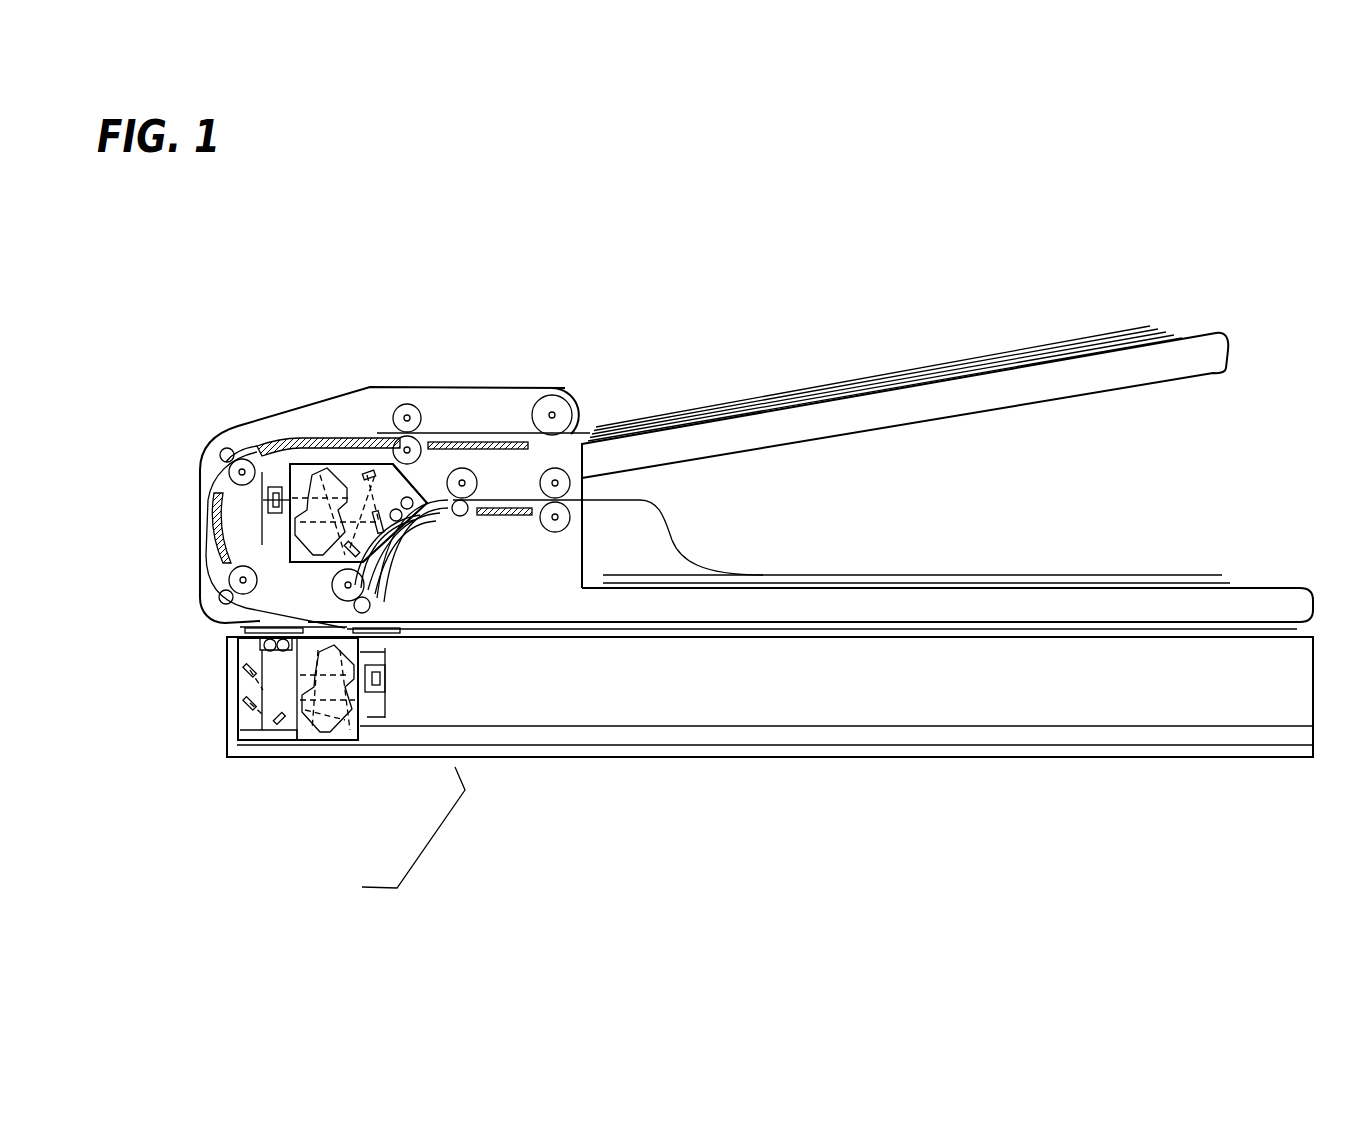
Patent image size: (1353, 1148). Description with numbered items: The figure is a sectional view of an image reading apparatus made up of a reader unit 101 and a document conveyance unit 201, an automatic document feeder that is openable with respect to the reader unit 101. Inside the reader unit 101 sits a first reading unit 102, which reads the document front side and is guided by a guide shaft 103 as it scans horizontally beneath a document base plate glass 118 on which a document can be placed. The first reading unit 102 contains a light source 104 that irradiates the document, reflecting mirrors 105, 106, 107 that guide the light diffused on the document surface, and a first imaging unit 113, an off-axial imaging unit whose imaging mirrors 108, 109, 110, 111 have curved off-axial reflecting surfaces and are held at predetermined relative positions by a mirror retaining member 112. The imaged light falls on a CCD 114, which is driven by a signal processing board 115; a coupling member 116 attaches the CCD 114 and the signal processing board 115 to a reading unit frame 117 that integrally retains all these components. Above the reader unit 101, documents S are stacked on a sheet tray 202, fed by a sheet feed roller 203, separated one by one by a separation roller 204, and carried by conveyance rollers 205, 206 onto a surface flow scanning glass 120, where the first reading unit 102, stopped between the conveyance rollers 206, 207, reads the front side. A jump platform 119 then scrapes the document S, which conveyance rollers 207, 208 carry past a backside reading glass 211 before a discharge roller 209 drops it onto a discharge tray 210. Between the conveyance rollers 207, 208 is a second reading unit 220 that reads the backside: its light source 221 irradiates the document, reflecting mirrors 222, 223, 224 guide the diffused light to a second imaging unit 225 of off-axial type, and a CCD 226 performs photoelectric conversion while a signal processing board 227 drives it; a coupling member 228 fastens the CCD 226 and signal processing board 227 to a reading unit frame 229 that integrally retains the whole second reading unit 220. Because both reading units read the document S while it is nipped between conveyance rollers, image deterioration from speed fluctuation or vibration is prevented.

The reader unit 101 is at (603, 760).
The first reading unit 102 is at (232, 693).
The guide shaft 103 is at (787, 737).
The light source 104 is at (265, 645).
The reflecting mirror 105 is at (277, 645).
The reflecting mirror 106 is at (245, 668).
The reflecting mirror 107 is at (242, 698).
The imaging mirror 108 is at (365, 740).
The imaging mirror 109 is at (312, 740).
The imaging mirror 110 is at (350, 740).
The imaging mirror 111 is at (317, 740).
The mirror retaining member 112 is at (342, 740).
The first imaging unit 113 is at (432, 840).
The CCD 114 is at (387, 677).
The signal processing board 115 is at (390, 687).
The coupling member 116 is at (382, 707).
The reading unit frame 117 is at (230, 725).
The document base plate glass 118 is at (482, 635).
The jump platform 119 is at (224, 598).
The surface flow scanning glass 120 is at (250, 628).
The document conveyance unit 201 is at (498, 403).
The sheet tray 202 is at (687, 442).
The sheet feed roller 203 is at (560, 398).
The separation roller 204 is at (407, 420).
The conveyance roller 205 is at (229, 468).
The conveyance roller 206 is at (229, 580).
The conveyance roller 207 is at (218, 538).
The conveyance roller 208 is at (462, 468).
The discharge roller 209 is at (560, 468).
The discharge tray 210 is at (830, 600).
The backside reading glass 211 is at (430, 503).
The second reading unit 220 is at (398, 552).
The light source 221 is at (408, 498).
The reflecting mirror 222 is at (312, 462).
The reflecting mirror 223 is at (385, 590).
The reflecting mirror 224 is at (370, 466).
The second imaging unit 225 is at (270, 468).
The CCD 226 is at (250, 458).
The signal processing board 227 is at (232, 458).
The coupling member 228 is at (268, 505).
The reading unit frame 229 is at (330, 440).
The document S is at (795, 388).